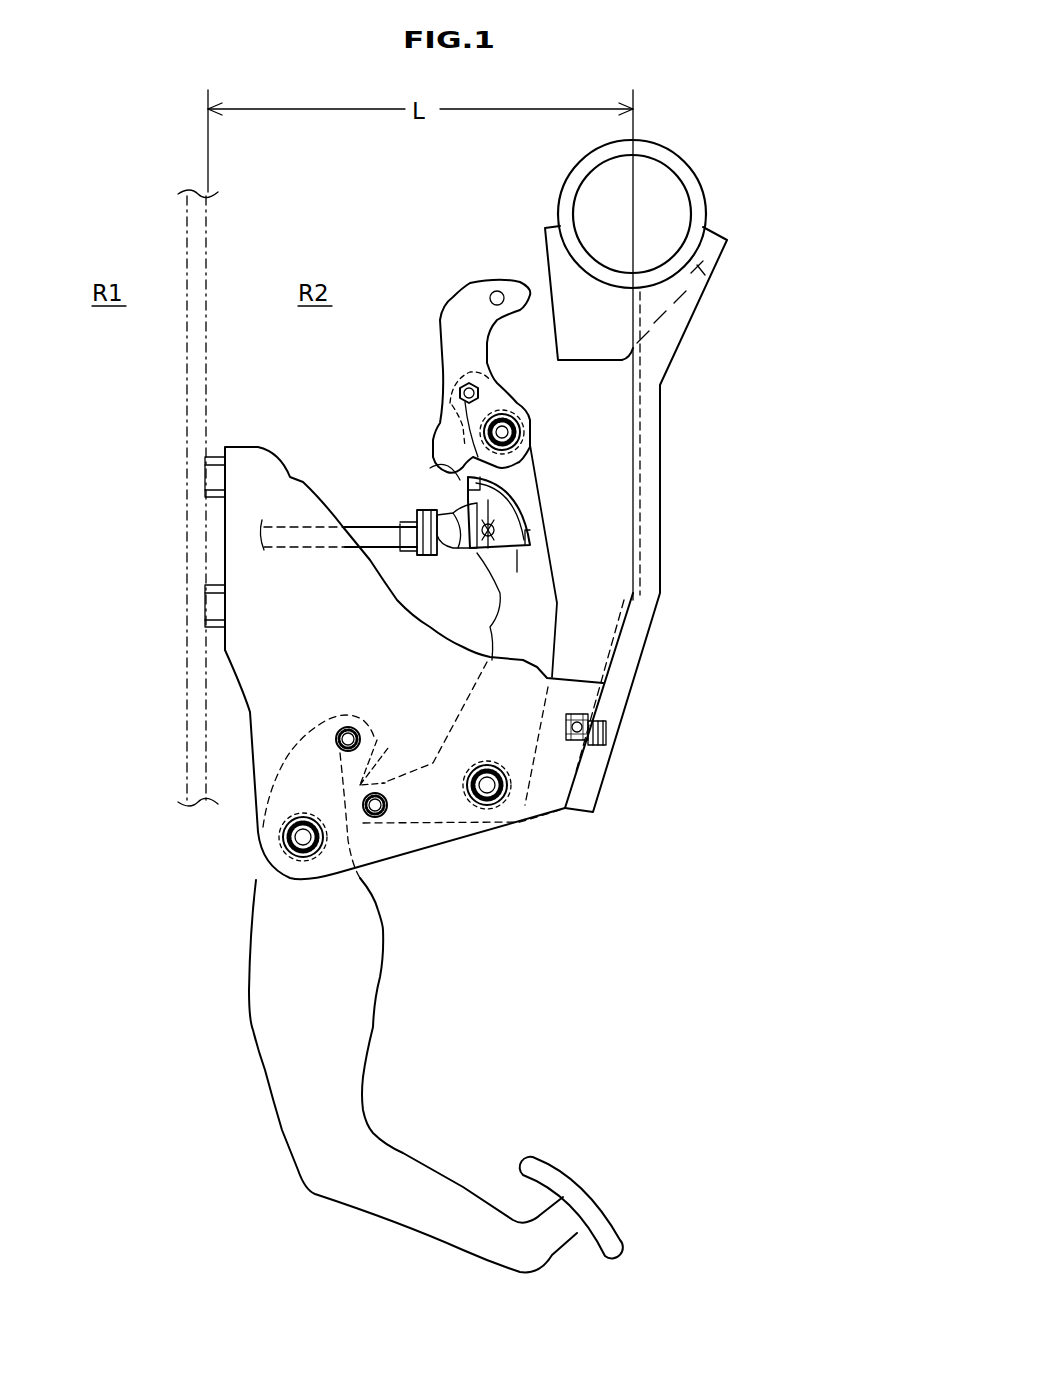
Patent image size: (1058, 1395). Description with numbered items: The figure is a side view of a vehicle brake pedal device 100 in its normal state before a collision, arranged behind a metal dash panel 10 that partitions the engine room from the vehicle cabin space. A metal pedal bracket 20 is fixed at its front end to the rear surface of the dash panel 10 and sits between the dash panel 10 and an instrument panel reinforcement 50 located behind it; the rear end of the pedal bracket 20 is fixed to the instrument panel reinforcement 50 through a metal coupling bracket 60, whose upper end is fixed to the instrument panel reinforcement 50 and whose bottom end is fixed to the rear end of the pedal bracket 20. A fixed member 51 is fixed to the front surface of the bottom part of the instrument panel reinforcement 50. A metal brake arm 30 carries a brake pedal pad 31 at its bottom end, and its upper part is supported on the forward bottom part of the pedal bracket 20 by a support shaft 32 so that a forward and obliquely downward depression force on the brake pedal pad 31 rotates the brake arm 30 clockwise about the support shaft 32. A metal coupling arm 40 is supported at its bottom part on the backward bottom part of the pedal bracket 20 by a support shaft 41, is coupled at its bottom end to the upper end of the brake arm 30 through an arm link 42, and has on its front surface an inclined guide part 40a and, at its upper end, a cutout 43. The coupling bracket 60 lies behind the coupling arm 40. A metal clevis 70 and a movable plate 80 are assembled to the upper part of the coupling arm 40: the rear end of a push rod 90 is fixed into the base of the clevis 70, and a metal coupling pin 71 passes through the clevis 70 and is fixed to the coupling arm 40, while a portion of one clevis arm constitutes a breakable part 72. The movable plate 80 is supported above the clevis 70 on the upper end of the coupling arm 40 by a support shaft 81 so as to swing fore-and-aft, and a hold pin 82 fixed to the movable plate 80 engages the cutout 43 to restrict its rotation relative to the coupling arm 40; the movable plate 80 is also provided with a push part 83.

The dash panel 10 is at (208, 378).
The pedal bracket 20 is at (547, 810).
The brake arm 30 is at (370, 986).
The brake pedal pad 31 is at (585, 1185).
The support shaft 32 is at (282, 850).
The coupling arm 40 is at (557, 603).
The guide part 40a is at (480, 570).
The support shaft 41 is at (488, 806).
The arm link 42 is at (383, 767).
The cutout 43 is at (449, 404).
The instrument panel reinforcement 50 is at (660, 160).
The fixed member 51 is at (540, 242).
The coupling bracket 60 is at (662, 491).
The clevis 70 is at (532, 515).
The coupling pin 71 is at (503, 548).
The breakable part 72 is at (472, 548).
The movable plate 80 is at (437, 343).
The support shaft 81 is at (519, 433).
The hold pin 82 is at (476, 391).
The push part 83 is at (445, 482).
The push rod 90 is at (380, 530).
The vehicle brake pedal device 100 is at (672, 603).